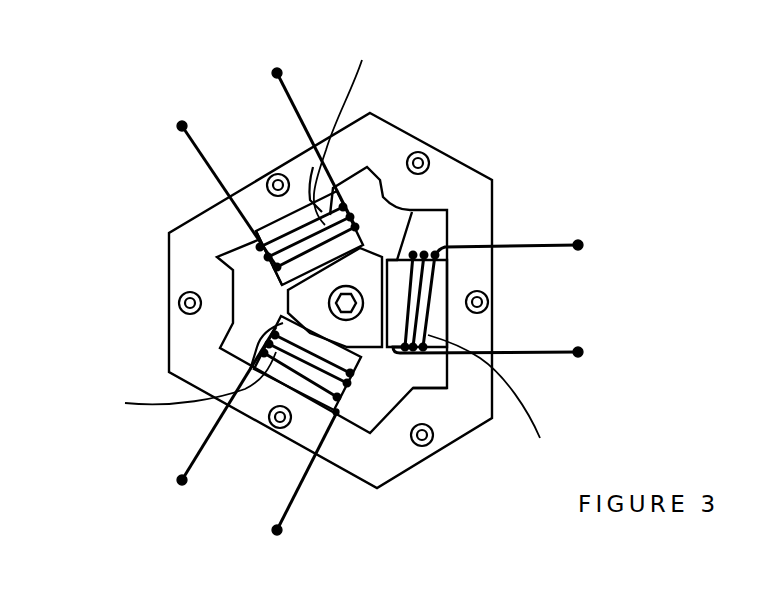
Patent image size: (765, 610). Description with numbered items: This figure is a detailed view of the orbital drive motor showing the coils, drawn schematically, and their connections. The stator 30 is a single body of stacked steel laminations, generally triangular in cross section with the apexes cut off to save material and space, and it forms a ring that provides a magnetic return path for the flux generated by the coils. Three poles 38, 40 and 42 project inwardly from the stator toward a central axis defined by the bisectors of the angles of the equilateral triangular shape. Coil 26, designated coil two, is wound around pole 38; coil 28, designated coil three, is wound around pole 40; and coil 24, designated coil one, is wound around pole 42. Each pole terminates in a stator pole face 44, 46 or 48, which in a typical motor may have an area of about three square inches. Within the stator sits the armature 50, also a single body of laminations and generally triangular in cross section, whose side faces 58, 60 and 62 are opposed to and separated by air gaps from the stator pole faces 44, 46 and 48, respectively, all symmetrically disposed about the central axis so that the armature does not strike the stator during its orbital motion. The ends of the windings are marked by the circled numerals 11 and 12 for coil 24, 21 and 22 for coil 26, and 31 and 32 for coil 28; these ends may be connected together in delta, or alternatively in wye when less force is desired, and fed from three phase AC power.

The winding end 11 is at (516, 352).
The winding end 12 is at (538, 243).
The winding end 21 is at (295, 122).
The winding end 22 is at (207, 169).
The winding end 31 is at (206, 432).
The winding end 32 is at (286, 497).
The coil 24 is at (427, 250).
The coil 26 is at (257, 255).
The coil 28 is at (337, 395).
The stator 30 is at (428, 460).
The pole 38 is at (257, 288).
The pole 40 is at (355, 388).
The pole 42 is at (385, 285).
The stator pole face 44 is at (322, 405).
The stator pole face 46 is at (420, 263).
The stator pole face 48 is at (270, 262).
The armature 50 is at (371, 250).
The armature pole face 58 is at (300, 370).
The armature pole face 60 is at (393, 333).
The armature pole face 62 is at (329, 215).